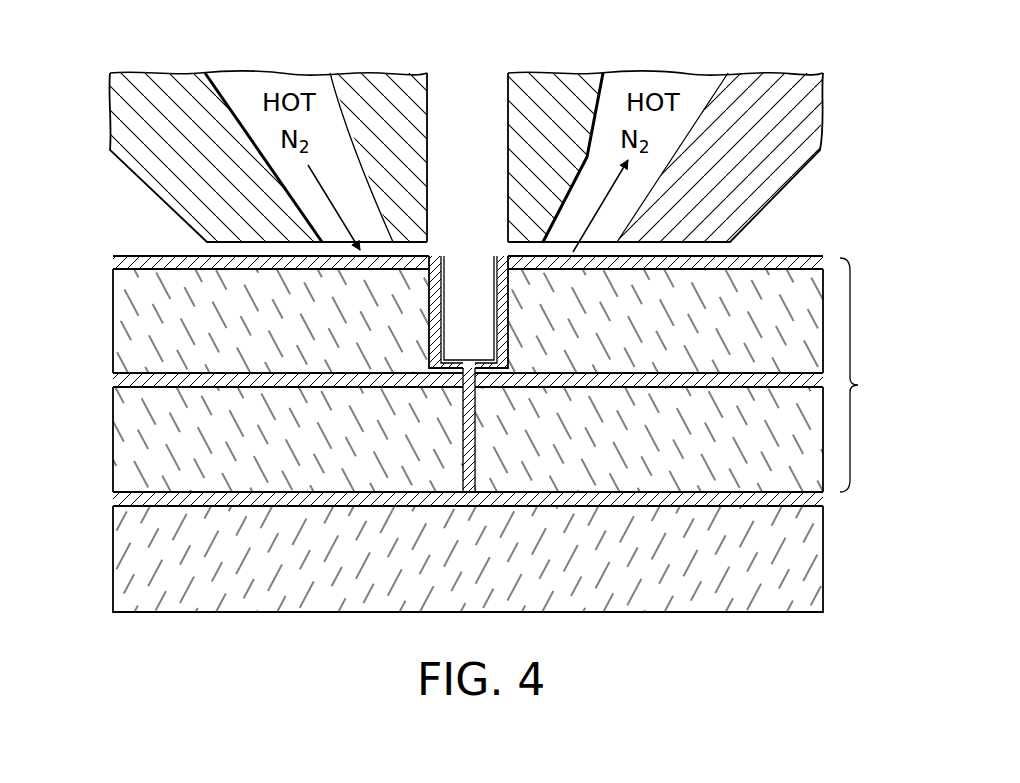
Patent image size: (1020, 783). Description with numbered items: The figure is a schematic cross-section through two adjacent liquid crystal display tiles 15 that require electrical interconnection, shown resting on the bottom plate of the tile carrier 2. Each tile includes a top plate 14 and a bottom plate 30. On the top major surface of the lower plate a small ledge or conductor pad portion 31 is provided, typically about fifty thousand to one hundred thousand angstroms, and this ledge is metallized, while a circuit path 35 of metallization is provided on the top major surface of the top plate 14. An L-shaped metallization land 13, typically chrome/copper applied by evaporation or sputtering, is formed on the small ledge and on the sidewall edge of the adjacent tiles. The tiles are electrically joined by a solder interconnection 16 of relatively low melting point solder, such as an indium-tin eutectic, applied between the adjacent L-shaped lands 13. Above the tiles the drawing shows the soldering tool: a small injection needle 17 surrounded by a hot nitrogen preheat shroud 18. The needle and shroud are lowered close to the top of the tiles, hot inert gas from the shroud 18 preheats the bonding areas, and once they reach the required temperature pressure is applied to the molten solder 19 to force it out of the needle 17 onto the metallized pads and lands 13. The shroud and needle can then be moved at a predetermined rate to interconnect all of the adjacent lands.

The bottom plate of the tile carrier 2 is at (705, 563).
The L-shaped metallization land 13 is at (499, 262).
The top plate 14 is at (711, 338).
The adjacent tiles 15 is at (865, 375).
The solder interconnection 16 is at (440, 262).
The injection needle 17 is at (542, 105).
The hot nitrogen preheat shroud 18 is at (763, 163).
The molten solder 19 is at (467, 160).
The bottom plate 30 is at (711, 450).
The ledge or conductor pad portion 31 is at (440, 373).
The circuit path 35 is at (153, 256).